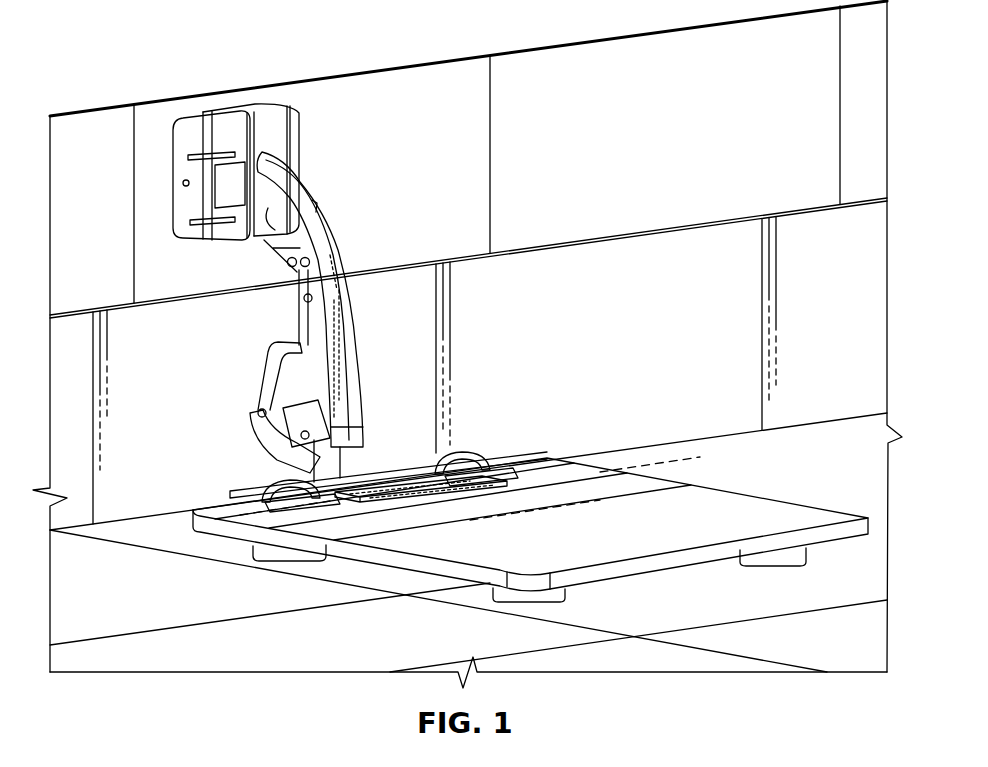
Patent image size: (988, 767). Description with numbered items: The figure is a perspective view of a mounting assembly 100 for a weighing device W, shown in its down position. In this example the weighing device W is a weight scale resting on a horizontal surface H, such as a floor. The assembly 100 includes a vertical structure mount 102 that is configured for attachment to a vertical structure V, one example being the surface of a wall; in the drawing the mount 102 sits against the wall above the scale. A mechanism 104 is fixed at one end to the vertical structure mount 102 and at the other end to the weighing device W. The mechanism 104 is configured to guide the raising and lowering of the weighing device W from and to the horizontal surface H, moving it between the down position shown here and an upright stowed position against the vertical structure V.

The mounting assembly 100 is at (234, 261).
The vertical structure mount 102 is at (300, 113).
The mechanism 104 is at (333, 230).
The vertical structure V is at (328, 77).
The weighing device W is at (750, 503).
The horizontal surface H is at (256, 663).